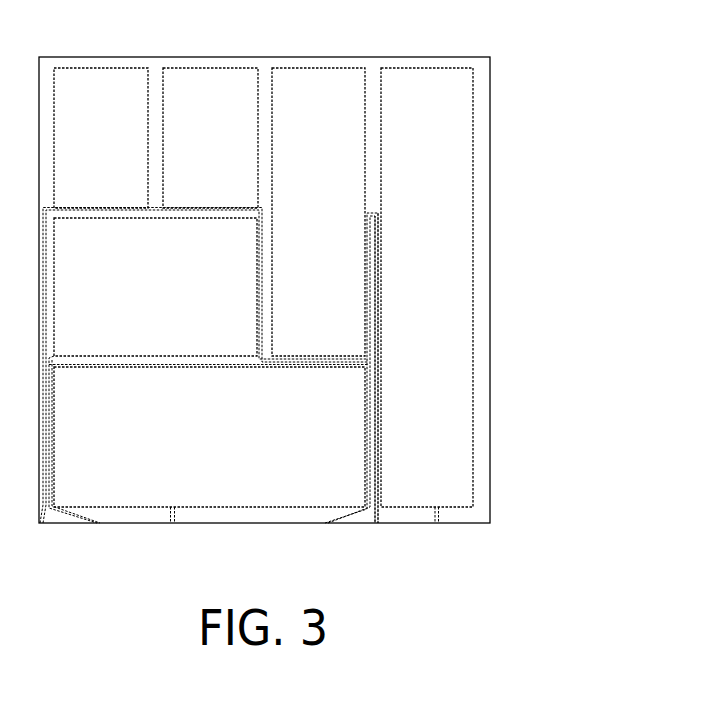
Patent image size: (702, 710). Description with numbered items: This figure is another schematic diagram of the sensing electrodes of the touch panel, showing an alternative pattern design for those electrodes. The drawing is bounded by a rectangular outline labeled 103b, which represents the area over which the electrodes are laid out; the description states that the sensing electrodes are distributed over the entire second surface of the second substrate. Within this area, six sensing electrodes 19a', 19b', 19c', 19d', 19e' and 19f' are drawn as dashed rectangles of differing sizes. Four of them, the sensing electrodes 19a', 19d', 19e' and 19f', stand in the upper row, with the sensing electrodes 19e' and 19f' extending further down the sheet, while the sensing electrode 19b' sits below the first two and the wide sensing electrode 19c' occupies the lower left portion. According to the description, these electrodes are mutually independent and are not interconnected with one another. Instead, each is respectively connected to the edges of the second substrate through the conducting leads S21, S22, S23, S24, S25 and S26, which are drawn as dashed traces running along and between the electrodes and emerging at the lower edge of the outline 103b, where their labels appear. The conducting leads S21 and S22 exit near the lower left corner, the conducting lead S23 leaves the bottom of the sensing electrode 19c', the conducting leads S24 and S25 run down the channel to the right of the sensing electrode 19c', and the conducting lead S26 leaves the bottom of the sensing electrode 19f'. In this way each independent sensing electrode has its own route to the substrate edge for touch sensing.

The touch panel (second substrate) 103b is at (597, 46).
The sensing electrode 19a' is at (101, 138).
The sensing electrode 19b' is at (155, 287).
The sensing electrode 19c' is at (209, 437).
The sensing electrode 19d' is at (210, 138).
The sensing electrode 19e' is at (318, 212).
The sensing electrode 19f' is at (427, 287).
The conducting lead S21 is at (203, 383).
The conducting lead S22 is at (208, 457).
The conducting lead S23 is at (172, 532).
The conducting lead S24 is at (340, 385).
The conducting lead S25 is at (378, 385).
The conducting lead S26 is at (436, 532).